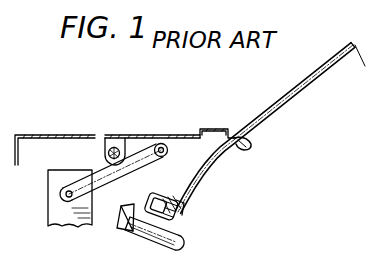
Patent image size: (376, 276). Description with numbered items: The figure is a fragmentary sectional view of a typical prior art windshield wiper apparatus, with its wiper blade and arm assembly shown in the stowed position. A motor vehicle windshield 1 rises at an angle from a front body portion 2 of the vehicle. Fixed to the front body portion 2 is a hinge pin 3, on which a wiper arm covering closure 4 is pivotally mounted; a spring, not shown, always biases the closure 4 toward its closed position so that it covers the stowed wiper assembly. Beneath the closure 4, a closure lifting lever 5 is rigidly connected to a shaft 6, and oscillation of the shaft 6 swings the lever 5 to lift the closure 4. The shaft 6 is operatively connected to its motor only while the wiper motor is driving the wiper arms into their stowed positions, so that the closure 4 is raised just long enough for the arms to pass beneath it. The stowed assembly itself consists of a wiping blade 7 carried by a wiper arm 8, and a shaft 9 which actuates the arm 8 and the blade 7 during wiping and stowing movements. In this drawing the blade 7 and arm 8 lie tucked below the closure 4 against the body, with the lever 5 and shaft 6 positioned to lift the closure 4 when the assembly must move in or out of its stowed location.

The motor vehicle windshield 1 is at (296, 100).
The front body portion 2 is at (58, 134).
The hinge pin 3 is at (118, 134).
The wiper arm covering closure 4 is at (185, 134).
The closure lifting lever 5 is at (152, 134).
The shaft 6 is at (63, 196).
The wiping blade 7 is at (172, 200).
The wiper arm 8 is at (125, 232).
The shaft 9 is at (157, 238).